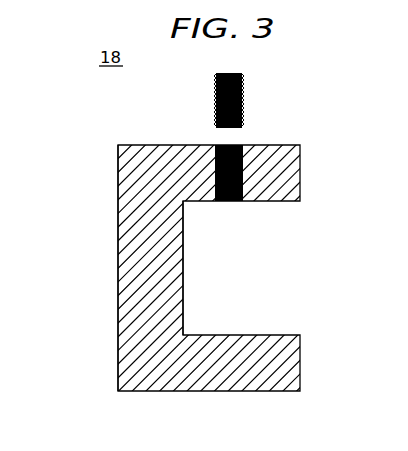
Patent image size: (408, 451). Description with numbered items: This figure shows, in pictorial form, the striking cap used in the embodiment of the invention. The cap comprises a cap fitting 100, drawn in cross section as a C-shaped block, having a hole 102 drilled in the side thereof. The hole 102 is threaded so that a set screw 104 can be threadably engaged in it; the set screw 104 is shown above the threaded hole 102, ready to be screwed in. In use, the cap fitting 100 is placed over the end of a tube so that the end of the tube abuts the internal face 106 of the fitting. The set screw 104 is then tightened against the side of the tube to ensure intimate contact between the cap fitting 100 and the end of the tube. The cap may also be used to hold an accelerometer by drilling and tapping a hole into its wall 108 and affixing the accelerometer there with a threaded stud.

The cap fitting 100 is at (285, 145).
The hole 102 is at (226, 202).
The set screw 104 is at (244, 99).
The internal face 106 is at (183, 284).
The wall 108 is at (118, 273).